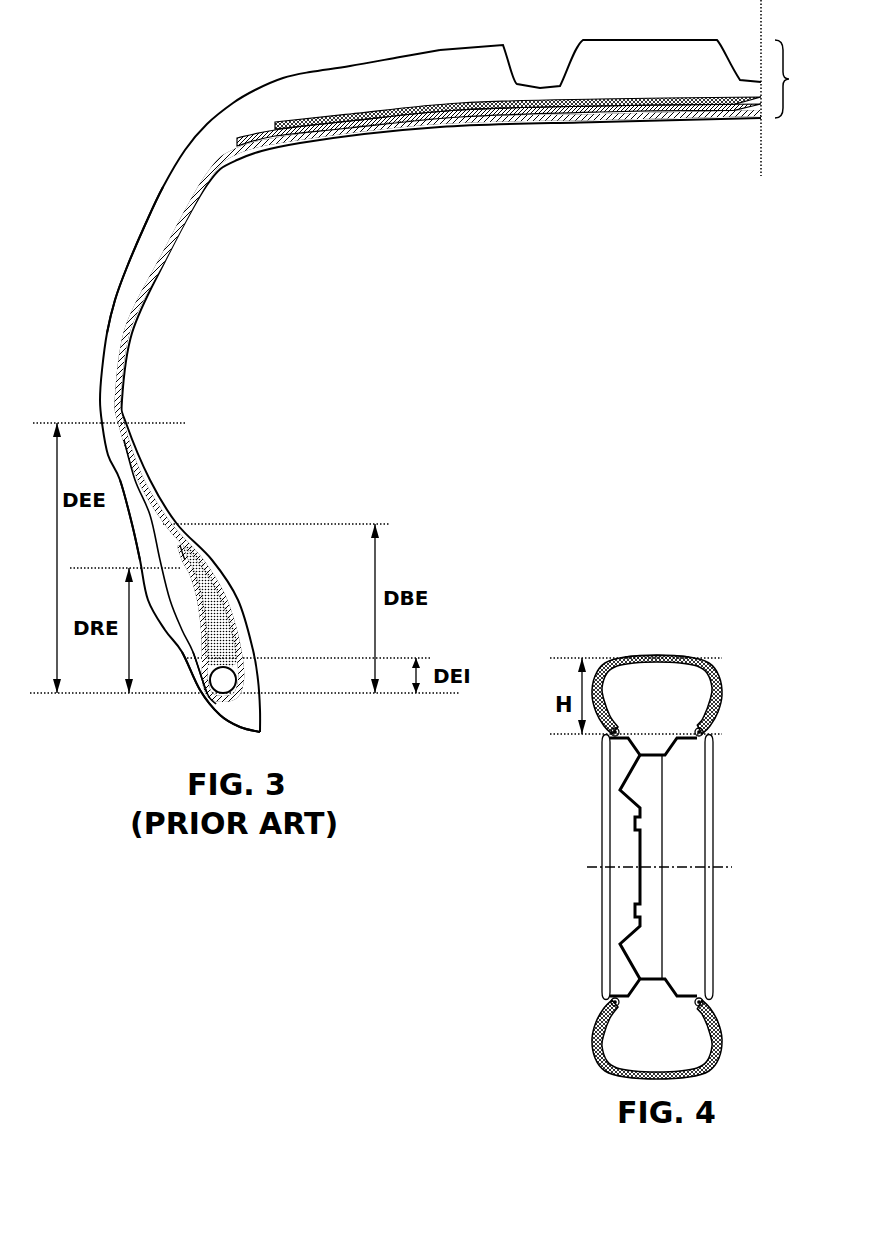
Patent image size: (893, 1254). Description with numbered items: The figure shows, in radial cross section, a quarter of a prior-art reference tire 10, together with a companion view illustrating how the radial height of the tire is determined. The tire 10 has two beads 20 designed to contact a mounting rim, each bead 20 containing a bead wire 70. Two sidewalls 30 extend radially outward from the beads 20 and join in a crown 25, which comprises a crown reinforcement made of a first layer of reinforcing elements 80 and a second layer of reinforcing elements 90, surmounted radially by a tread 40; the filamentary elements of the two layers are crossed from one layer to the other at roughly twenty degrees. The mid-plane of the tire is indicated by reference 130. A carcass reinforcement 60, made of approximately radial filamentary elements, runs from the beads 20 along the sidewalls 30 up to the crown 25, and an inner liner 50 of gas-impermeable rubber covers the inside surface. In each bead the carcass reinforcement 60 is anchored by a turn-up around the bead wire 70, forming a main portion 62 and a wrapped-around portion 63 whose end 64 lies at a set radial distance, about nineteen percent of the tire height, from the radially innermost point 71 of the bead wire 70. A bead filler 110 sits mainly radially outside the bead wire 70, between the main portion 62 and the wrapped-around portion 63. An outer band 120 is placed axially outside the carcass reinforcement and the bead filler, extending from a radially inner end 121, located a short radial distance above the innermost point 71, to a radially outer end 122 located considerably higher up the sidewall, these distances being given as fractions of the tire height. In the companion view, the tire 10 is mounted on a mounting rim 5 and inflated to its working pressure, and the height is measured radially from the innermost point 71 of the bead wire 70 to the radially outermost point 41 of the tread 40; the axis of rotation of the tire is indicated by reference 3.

In FIG. 3, the tire 10 is at (158, 125).
In FIG. 4, the tire 10 is at (736, 701).
In FIG. 3, the bead 20 is at (190, 650).
In FIG. 3, the crown 25 is at (805, 79).
In FIG. 3, the sidewall 30 is at (123, 300).
In FIG. 3, the tread 40 is at (497, 83).
In FIG. 4, the radially outermost point of the tread 41 is at (656, 648).
In FIG. 3, the inner liner 50 is at (132, 320).
In FIG. 3, the carcass reinforcement 60 is at (118, 372).
In FIG. 3, the main portion 62 is at (217, 588).
In FIG. 3, the wrapped-around portion 63 is at (205, 610).
In FIG. 3, the end of the wrapped-around portion 64 is at (174, 560).
In FIG. 3, the bead wire 70 is at (223, 683).
In FIG. 4, the bead wire 70 is at (618, 730).
In FIG. 3, the radially innermost point of the bead wire 71 is at (230, 705).
In FIG. 3, the first layer of reinforcing elements 80 is at (310, 117).
In FIG. 3, the second layer of reinforcing elements 90 is at (347, 115).
In FIG. 3, the bead filler 110 is at (233, 618).
In FIG. 3, the outer band 120 is at (138, 498).
In FIG. 3, the radially inner end of the outer band 121 is at (203, 657).
In FIG. 3, the radially outer end of the outer band 122 is at (115, 416).
In FIG. 3, the mid-plane of the tire 130 is at (762, 168).
In FIG. 4, the mounting rim 5 is at (735, 779).
In FIG. 4, the axis of rotation 3 is at (678, 871).